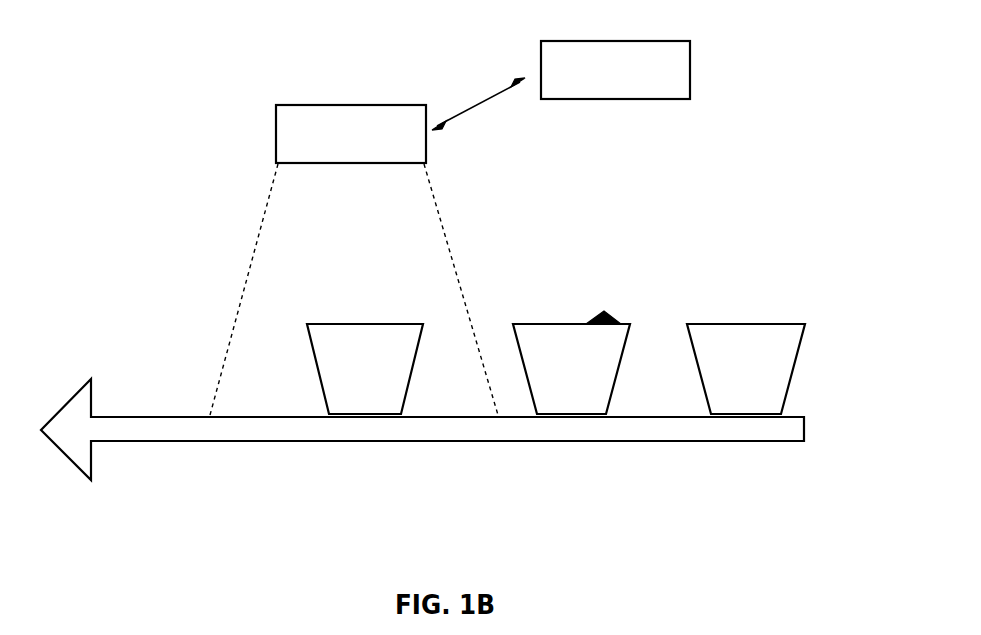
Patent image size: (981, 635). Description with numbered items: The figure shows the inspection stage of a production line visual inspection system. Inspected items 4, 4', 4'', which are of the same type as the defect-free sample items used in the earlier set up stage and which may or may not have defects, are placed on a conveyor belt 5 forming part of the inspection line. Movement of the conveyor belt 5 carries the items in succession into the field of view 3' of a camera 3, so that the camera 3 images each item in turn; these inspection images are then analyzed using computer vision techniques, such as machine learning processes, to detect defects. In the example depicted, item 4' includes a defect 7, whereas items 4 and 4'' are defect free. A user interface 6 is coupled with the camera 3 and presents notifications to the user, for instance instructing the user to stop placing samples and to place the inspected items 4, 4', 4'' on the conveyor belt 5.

The camera 3 is at (351, 134).
The field of view 3' is at (325, 289).
The inspected item 4 is at (365, 369).
The inspected item 4' is at (571, 369).
The inspected item 4'' is at (746, 369).
The conveyor belt 5 is at (277, 428).
The user interface 6 is at (561, 85).
The defect 7 is at (612, 318).